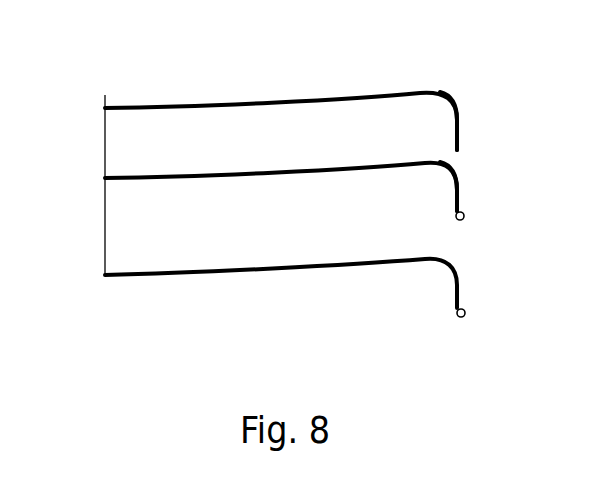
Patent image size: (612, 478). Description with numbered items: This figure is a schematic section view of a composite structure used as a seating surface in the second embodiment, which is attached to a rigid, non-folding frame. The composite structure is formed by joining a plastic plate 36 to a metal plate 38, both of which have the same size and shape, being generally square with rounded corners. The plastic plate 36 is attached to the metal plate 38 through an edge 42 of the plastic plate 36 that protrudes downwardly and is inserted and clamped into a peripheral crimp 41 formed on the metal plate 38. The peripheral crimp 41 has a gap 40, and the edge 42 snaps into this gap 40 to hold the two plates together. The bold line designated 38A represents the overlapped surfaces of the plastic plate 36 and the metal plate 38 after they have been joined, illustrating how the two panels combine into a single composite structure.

The plastic plate 36 is at (314, 103).
The metal plate 38 is at (194, 178).
The overlapped surfaces 38A is at (224, 268).
The gap 40 is at (465, 205).
The peripheral crimp 41 is at (468, 222).
The edge 42 is at (460, 133).